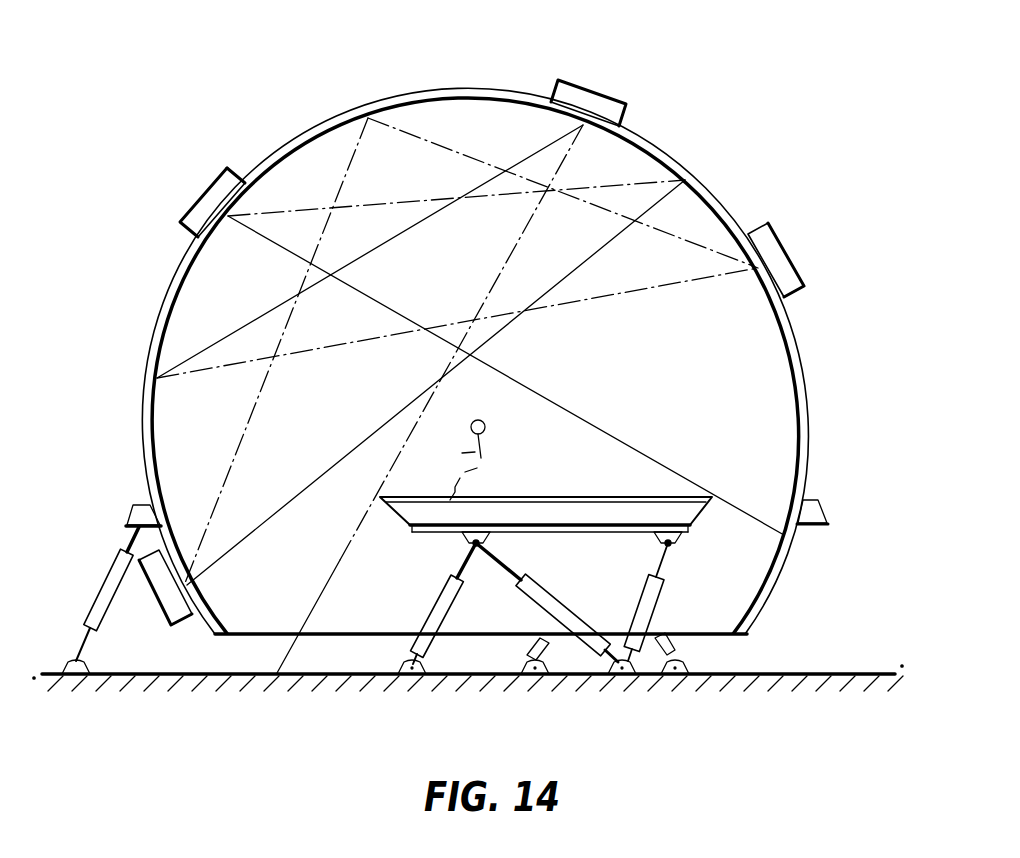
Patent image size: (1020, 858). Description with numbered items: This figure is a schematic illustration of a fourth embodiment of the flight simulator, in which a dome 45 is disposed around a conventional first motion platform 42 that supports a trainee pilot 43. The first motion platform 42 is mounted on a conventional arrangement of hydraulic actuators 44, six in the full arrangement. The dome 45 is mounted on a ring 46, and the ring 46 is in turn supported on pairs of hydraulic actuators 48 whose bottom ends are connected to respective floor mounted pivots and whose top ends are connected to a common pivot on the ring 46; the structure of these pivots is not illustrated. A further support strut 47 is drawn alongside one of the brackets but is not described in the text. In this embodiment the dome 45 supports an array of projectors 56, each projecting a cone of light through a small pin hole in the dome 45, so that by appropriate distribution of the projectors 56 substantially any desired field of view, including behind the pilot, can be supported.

The first motion platform 42 is at (582, 537).
The trainee pilot 43 is at (486, 440).
The hydraulic actuators 44 is at (433, 603).
The dome 45 is at (154, 343).
The ring 46 is at (143, 512).
The support strut for dome 47 is at (112, 582).
The hydraulic actuators 48 is at (672, 643).
The projectors 56 is at (205, 203).